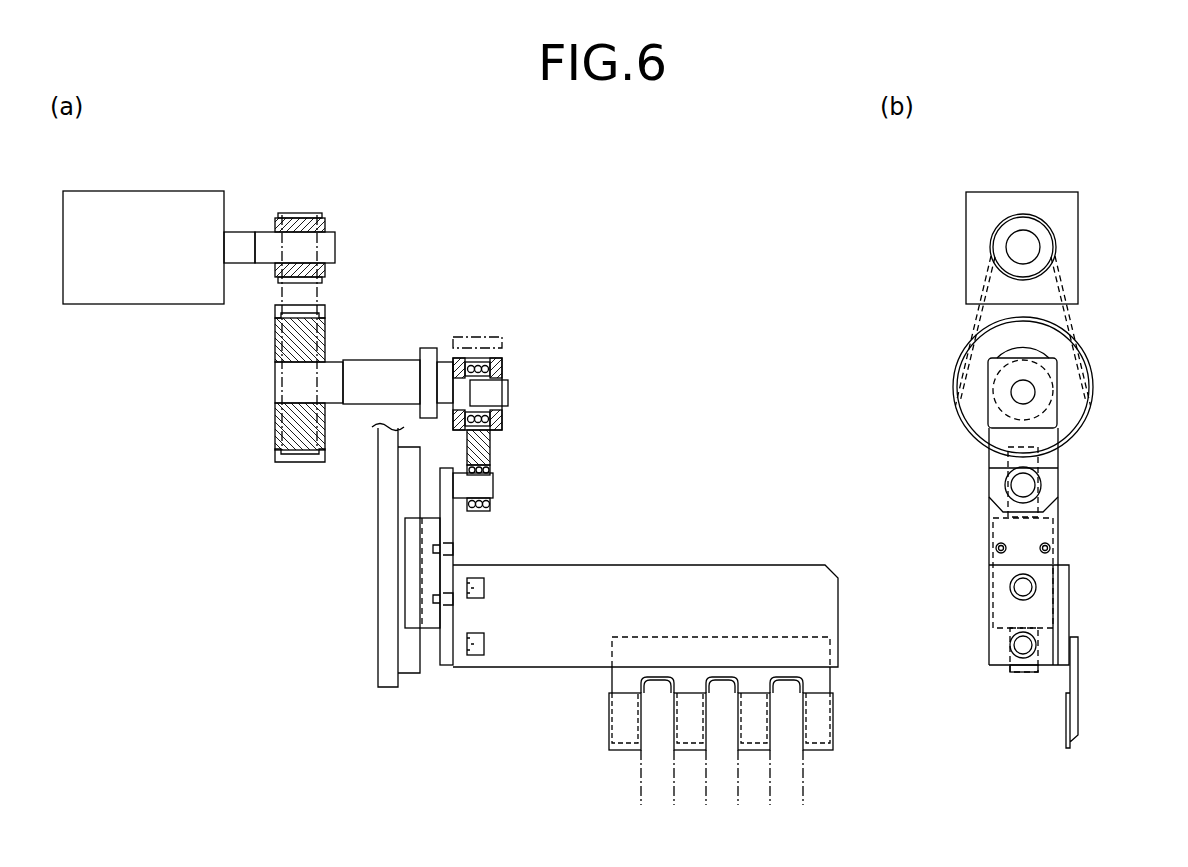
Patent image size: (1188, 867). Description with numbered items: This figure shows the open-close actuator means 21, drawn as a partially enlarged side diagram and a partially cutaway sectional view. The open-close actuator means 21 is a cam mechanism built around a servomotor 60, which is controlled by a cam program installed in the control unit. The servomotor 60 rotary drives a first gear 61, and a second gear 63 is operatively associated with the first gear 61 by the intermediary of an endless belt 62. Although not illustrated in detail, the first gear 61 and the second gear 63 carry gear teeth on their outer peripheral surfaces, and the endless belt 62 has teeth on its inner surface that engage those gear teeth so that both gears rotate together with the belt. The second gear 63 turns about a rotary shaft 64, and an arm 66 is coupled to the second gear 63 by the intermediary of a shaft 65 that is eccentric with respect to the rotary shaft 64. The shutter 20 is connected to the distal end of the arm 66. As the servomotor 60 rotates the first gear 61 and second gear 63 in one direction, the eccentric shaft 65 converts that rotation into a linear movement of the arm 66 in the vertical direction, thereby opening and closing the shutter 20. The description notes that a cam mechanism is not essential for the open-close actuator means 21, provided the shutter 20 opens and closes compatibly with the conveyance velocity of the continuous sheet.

The servomotor 60 is at (186, 211).
The first gear 61 is at (300, 218).
The endless belt 62 is at (318, 297).
The second gear 63 is at (305, 343).
The rotary shaft 64 is at (400, 372).
The shaft 65 is at (498, 392).
The arm 66 is at (480, 448).
The shutter 20 is at (815, 680).
The open-close actuator means 21 is at (456, 203).